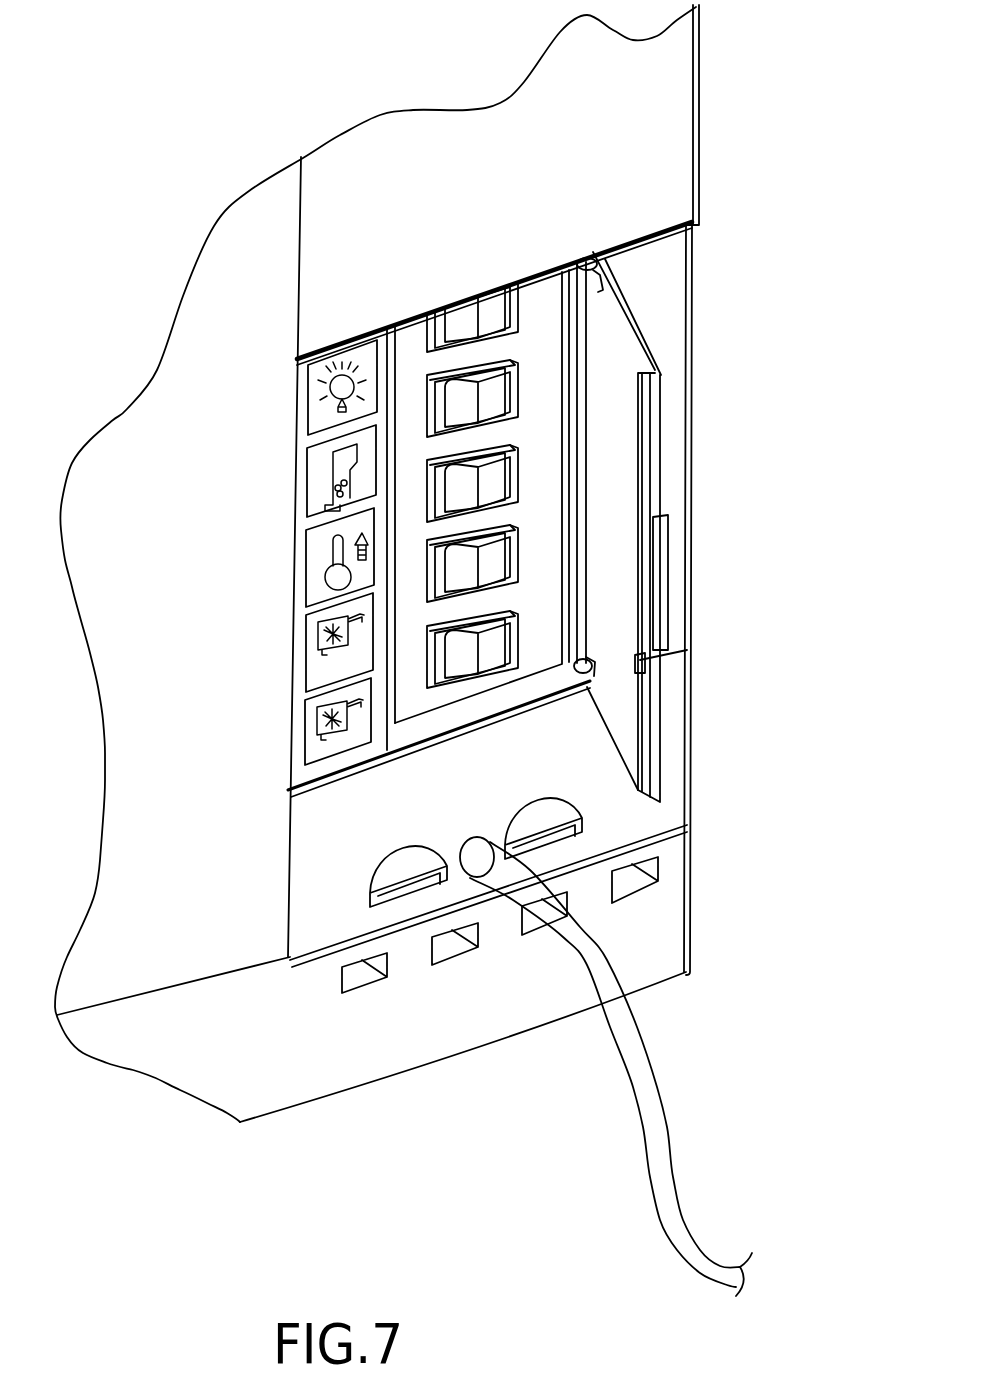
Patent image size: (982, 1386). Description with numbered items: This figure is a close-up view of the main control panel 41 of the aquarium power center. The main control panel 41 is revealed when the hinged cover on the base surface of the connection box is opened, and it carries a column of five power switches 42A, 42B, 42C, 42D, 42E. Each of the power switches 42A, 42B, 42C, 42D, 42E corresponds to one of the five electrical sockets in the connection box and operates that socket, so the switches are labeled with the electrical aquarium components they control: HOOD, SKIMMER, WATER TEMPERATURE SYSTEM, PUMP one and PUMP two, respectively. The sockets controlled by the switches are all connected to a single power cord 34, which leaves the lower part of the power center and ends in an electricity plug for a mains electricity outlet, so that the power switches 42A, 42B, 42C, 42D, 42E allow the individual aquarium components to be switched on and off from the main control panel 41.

The main control panel 41 is at (568, 239).
The power switch 42A is at (497, 317).
The power switch 42B is at (497, 403).
The power switch 42C is at (493, 490).
The power switch 42D is at (488, 567).
The power switch 42E is at (488, 655).
The power cord 34 is at (650, 1090).